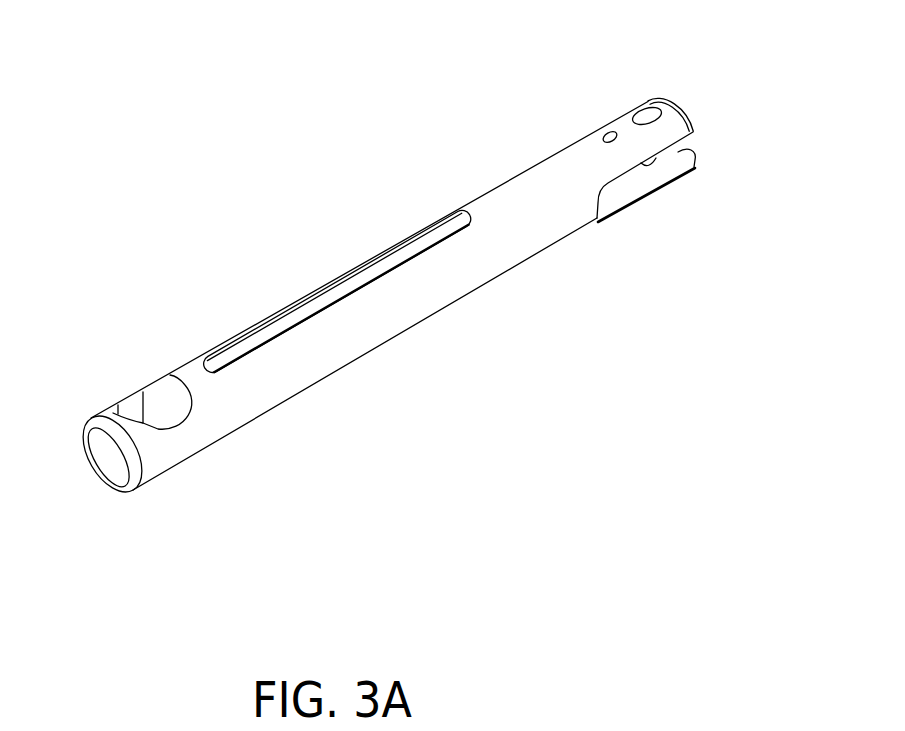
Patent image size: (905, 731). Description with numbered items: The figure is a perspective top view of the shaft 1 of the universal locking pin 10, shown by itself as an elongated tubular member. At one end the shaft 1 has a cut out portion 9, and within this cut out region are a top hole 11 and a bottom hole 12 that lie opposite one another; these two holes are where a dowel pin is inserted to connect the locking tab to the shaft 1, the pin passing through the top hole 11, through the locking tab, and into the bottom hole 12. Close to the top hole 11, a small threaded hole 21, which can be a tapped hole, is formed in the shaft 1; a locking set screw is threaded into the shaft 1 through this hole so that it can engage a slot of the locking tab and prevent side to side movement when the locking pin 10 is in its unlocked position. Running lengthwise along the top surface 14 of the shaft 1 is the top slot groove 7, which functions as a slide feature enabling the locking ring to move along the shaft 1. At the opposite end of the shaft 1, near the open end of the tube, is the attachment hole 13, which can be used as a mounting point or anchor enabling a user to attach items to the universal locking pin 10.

The shaft 1 is at (467, 302).
The top slot groove 7 is at (250, 345).
The cut out portion 9 is at (626, 188).
The universal locking pin 10 is at (242, 152).
The top hole 11 is at (636, 110).
The bottom hole 12 is at (657, 167).
The attachment hole 13 is at (163, 412).
The top surface 14 is at (515, 244).
The small threaded hole 21 is at (600, 131).